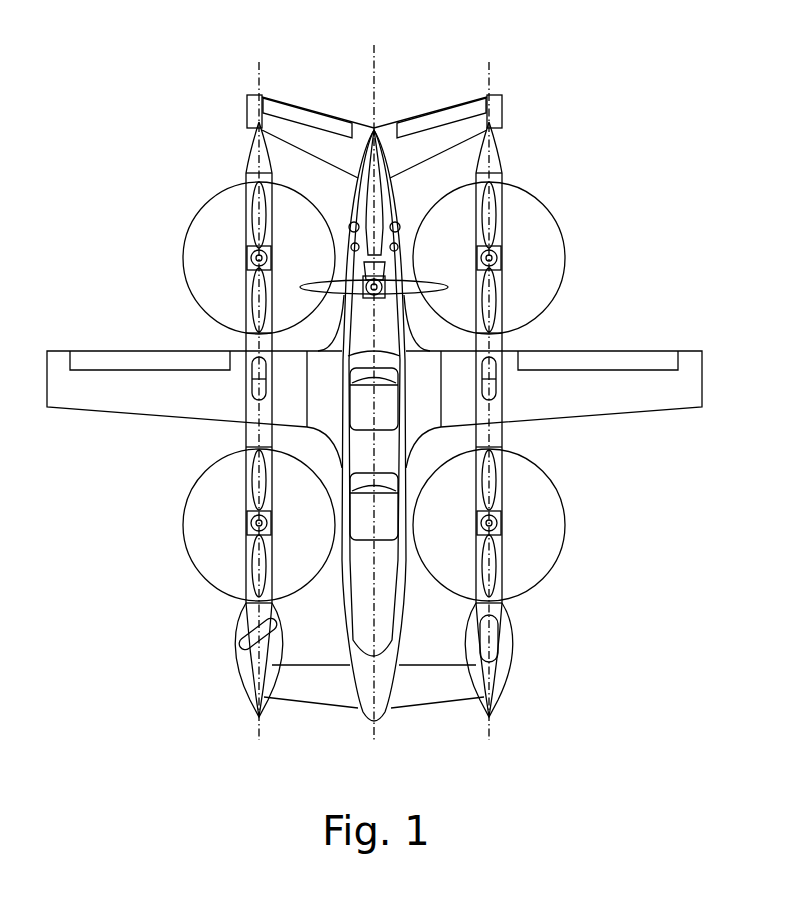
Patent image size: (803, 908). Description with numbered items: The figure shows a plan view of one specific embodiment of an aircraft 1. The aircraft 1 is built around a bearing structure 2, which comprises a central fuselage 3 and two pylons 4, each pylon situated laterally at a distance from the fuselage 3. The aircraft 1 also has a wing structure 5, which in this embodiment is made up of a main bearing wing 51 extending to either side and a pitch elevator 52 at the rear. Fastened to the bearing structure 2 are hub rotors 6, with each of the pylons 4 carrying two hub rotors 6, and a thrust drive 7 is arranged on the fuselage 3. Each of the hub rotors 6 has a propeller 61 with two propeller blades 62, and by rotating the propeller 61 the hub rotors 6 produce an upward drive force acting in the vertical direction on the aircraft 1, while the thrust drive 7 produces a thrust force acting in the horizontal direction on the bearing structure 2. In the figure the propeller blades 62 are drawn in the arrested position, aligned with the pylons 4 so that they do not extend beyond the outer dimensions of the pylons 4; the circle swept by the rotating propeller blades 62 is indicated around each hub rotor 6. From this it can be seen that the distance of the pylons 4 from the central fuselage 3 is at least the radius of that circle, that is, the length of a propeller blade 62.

The aircraft 1 is at (121, 71).
The bearing structure 2 is at (427, 400).
The central fuselage 3 is at (384, 463).
The pylons 4 is at (374, 419).
The wing structure 5 is at (530, 110).
The main bearing wing 51 is at (630, 395).
The pitch elevator 52 is at (445, 117).
The hub rotors 6 is at (222, 268).
The propeller 61 is at (271, 258).
The propeller blades 62 is at (257, 287).
The thrust drive 7 is at (380, 270).